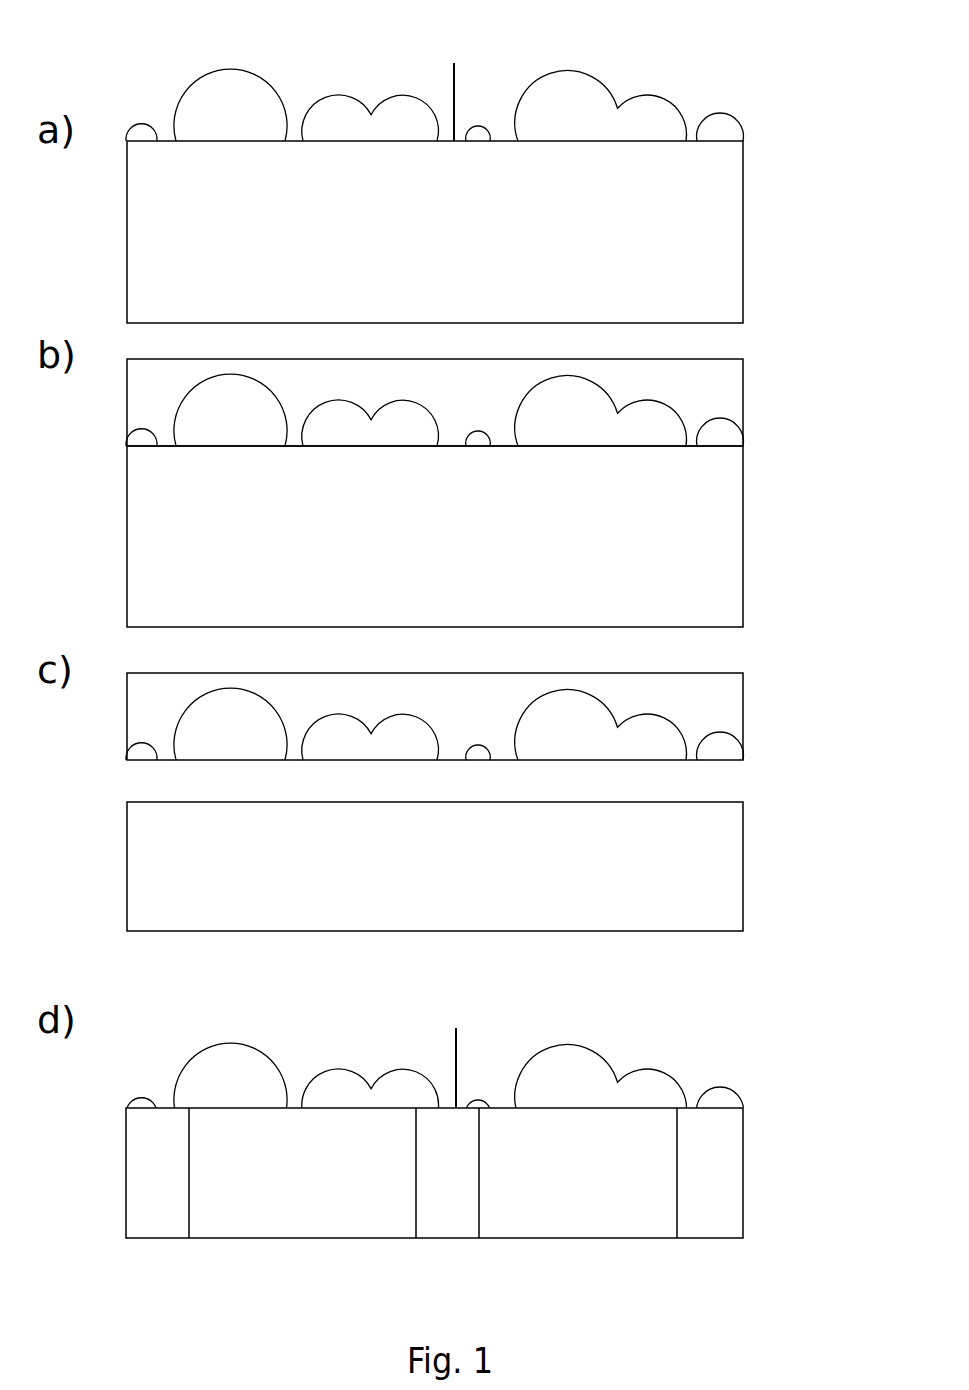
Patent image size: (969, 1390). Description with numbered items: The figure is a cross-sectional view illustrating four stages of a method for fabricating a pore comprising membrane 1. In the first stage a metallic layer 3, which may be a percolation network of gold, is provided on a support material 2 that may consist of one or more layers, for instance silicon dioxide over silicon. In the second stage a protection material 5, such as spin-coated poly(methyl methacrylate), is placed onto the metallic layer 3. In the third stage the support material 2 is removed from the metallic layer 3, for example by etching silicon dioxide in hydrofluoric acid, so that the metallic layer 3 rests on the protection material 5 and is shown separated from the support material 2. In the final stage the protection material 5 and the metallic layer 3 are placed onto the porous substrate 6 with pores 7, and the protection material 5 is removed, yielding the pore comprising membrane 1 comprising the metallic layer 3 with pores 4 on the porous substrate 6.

The pore comprising membrane 1 is at (453, 1173).
The support material 2 is at (743, 261).
The metallic layer 3 is at (732, 134).
The pores 4 is at (454, 557).
The protection material 5 is at (743, 392).
The porous substrate 6 is at (743, 1213).
The pores 7 is at (720, 1147).